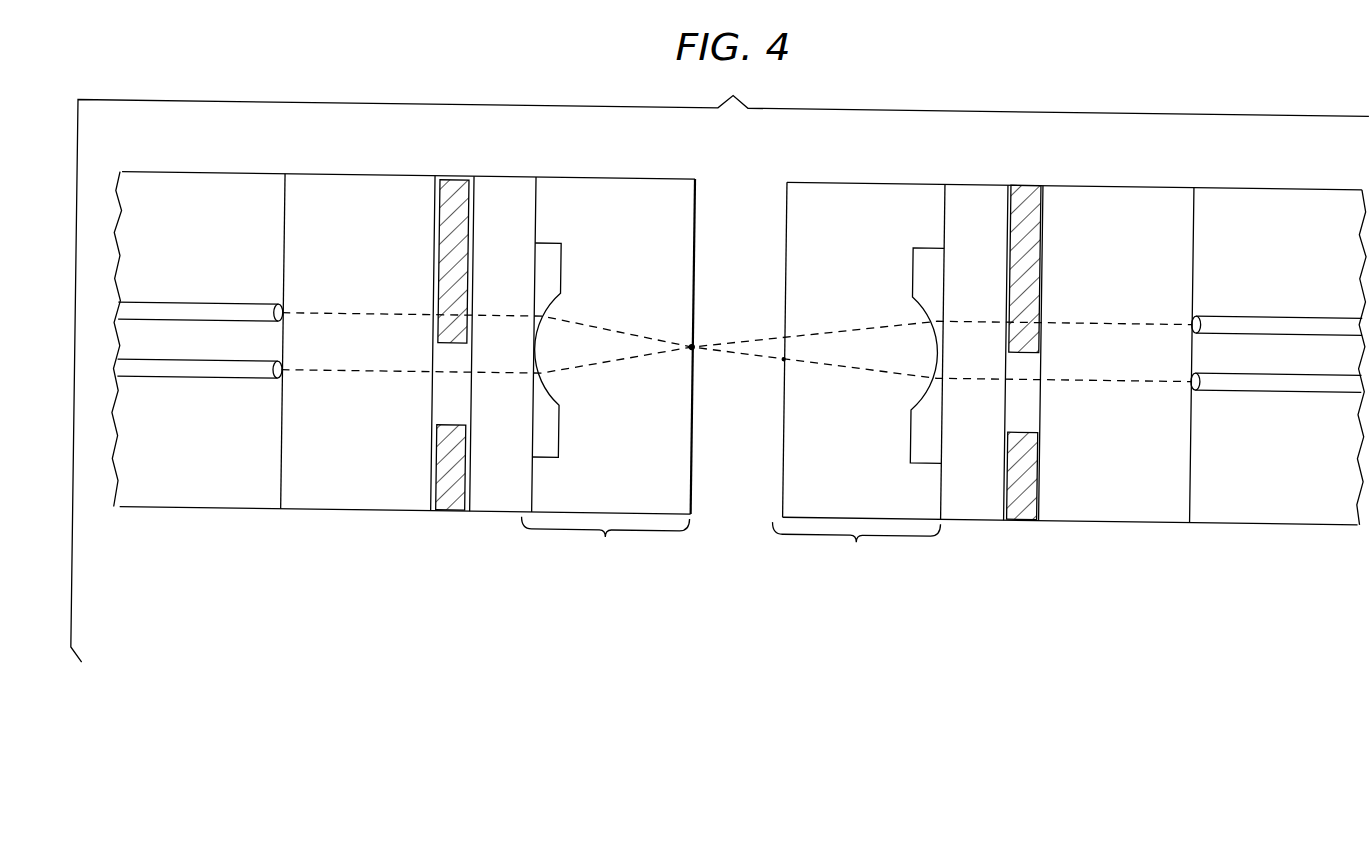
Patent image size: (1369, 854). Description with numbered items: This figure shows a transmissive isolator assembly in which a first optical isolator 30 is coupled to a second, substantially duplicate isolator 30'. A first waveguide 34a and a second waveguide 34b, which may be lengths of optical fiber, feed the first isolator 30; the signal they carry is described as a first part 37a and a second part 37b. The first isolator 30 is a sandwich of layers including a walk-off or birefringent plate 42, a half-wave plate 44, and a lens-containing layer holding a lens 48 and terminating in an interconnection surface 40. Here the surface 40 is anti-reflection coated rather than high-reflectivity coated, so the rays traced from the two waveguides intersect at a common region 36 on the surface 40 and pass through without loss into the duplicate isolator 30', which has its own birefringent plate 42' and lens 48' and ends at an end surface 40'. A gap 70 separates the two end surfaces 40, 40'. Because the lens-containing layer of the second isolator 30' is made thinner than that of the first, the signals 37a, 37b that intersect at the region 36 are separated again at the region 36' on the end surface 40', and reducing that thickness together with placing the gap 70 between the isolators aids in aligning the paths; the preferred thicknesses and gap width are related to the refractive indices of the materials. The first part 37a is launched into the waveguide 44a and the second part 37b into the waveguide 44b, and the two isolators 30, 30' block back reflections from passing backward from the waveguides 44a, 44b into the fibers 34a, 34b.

The optical isolator 30 is at (402, 386).
The second isolator 30' is at (1069, 388).
The first waveguide 34a is at (173, 301).
The second waveguide 34b is at (171, 376).
The common region 36 is at (717, 328).
The region at end surface of second isolator 36' is at (755, 381).
The first part of the signal 37a is at (356, 308).
The second part of the signal 37b is at (356, 369).
The interconnection surface 40 is at (720, 345).
The end surface of the second isolator 40' is at (775, 324).
The walk-off or birefringent plate 42 is at (335, 320).
The housing of second assembly 42' is at (966, 328).
The half-wave plate 44 is at (456, 180).
The waveguide 44a is at (1304, 376).
The waveguide 44b is at (1308, 302).
The lens 48 is at (572, 345).
The lens of second assembly 48' is at (901, 349).
The gap 70 is at (738, 517).